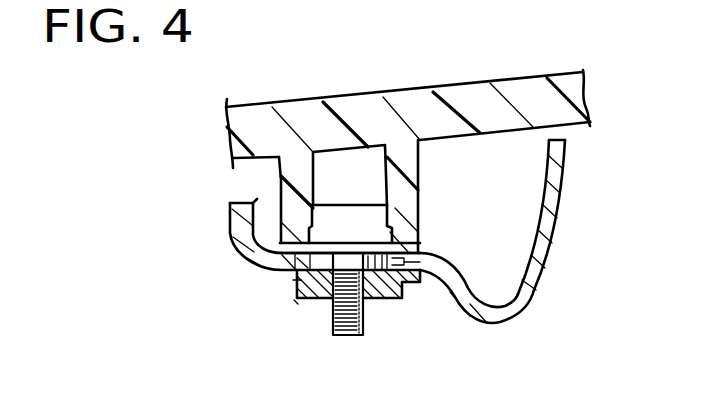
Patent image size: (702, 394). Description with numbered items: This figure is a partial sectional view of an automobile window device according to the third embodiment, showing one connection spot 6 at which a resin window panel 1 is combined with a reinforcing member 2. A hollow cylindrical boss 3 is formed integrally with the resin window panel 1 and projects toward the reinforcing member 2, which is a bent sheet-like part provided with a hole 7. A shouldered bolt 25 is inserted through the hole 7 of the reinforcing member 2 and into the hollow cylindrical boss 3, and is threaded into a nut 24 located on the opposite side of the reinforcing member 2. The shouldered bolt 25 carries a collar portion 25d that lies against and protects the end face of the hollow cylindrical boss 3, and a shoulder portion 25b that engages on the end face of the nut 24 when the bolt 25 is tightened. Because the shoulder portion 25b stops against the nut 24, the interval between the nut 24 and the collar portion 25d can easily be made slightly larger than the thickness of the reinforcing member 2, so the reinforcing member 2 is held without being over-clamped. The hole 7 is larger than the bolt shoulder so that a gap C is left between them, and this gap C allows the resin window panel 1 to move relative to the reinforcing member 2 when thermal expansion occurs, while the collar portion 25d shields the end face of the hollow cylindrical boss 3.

The resin window panel 1 is at (383, 97).
The reinforcing member 2 is at (557, 205).
The hollow cylindrical boss 3 is at (400, 158).
The connection spot 6 is at (295, 302).
The hole 7 is at (433, 271).
The nut 24 is at (323, 291).
The shouldered bolt 25 is at (370, 220).
The shoulder portion 25b is at (383, 300).
The collar portion 25d is at (393, 245).
The gap C is at (297, 284).